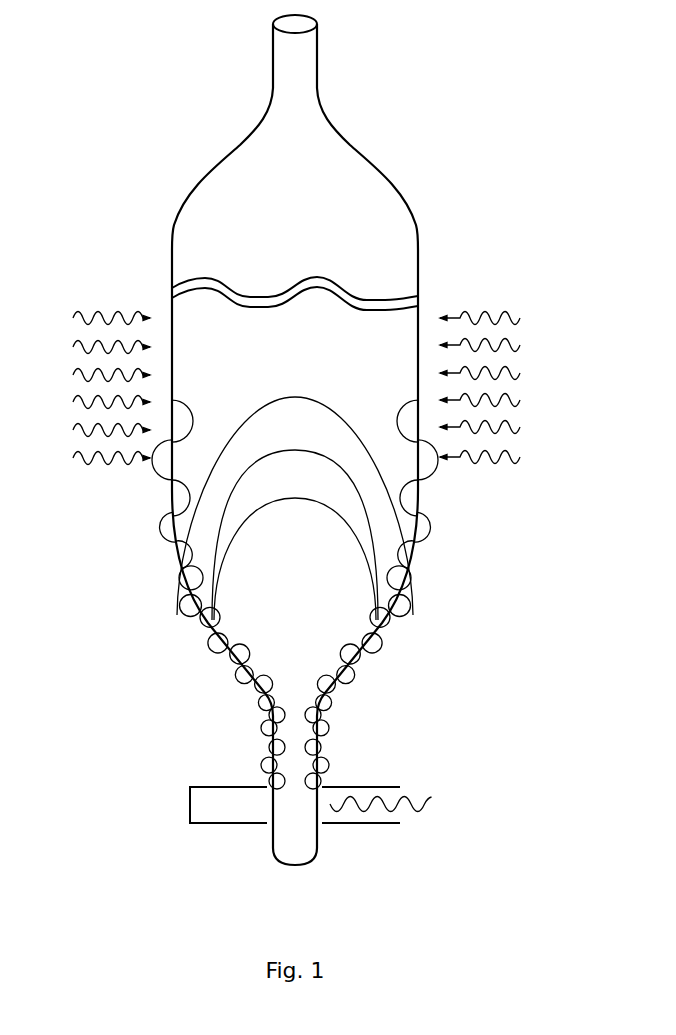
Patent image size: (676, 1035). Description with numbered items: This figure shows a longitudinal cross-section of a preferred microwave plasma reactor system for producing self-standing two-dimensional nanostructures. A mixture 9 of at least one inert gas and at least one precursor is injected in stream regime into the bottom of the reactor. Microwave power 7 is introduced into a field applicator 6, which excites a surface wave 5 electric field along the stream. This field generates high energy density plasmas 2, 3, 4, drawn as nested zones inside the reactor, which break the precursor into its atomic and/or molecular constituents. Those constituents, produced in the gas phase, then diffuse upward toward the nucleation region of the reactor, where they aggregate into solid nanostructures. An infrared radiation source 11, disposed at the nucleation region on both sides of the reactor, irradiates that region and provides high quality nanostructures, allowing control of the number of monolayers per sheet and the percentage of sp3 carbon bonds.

The high energy density plasma 2 is at (298, 392).
The high energy density plasma 3 is at (298, 445).
The high energy density plasma 4 is at (295, 493).
The surface wave 5 is at (253, 743).
The field applicator 6 is at (333, 775).
The microwave power 7 is at (438, 805).
The mixture 9 is at (295, 873).
The infrared radiation source 11 is at (130, 303).